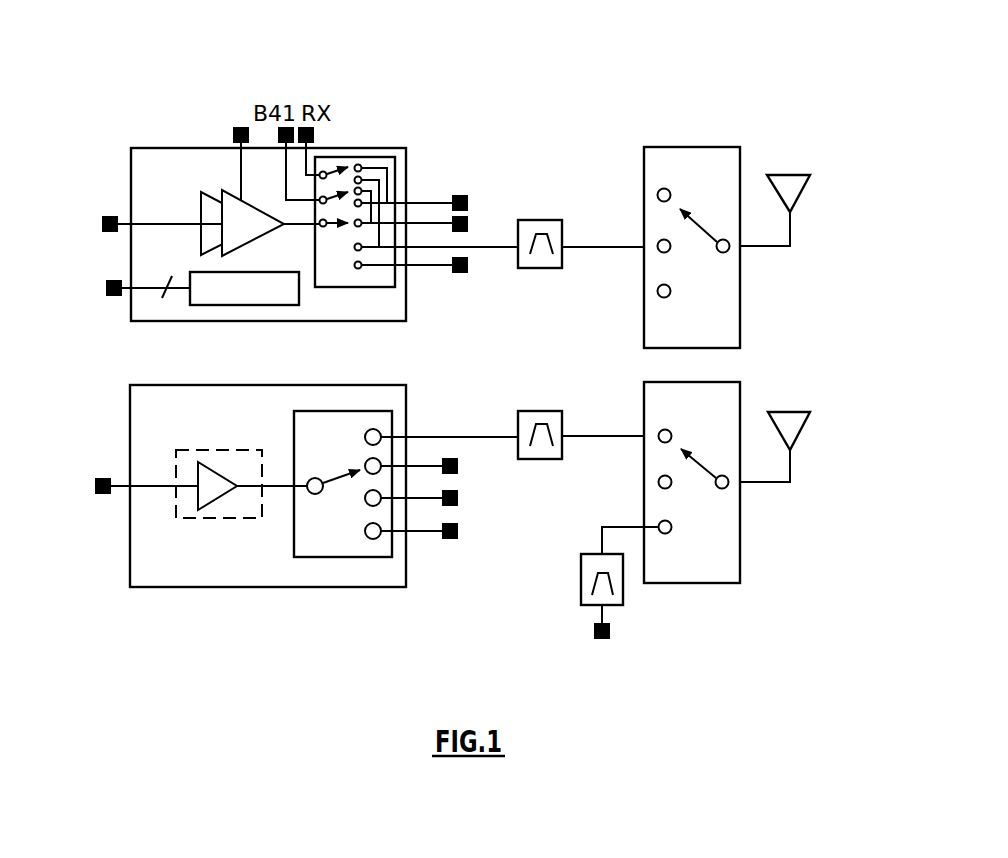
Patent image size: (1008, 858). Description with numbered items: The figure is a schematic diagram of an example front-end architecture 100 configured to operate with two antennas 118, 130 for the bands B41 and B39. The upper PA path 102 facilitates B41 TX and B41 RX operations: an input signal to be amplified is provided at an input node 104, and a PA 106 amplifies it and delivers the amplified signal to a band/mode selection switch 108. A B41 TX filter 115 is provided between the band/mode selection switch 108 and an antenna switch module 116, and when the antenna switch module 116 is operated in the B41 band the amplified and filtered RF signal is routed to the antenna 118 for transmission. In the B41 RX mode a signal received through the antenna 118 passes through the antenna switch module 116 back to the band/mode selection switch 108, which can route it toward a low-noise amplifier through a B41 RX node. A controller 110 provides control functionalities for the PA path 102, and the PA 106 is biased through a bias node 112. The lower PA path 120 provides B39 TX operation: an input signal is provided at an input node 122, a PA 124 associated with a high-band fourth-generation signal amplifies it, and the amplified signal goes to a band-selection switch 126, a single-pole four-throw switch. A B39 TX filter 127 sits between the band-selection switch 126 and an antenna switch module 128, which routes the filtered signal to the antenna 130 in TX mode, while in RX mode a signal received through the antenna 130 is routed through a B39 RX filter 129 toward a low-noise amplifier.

The front-end architecture 100 is at (477, 60).
The PA path 102 is at (155, 148).
The input node 104 is at (108, 215).
The PA 106 is at (211, 182).
The band/mode selection switch 108 is at (388, 287).
The controller 110 is at (245, 272).
The bias node 112 is at (233, 128).
The B41 TX filter 115 is at (540, 268).
The antenna switch module 116 is at (690, 147).
The antenna 118 is at (796, 205).
The PA path 120 is at (155, 385).
The input node 122 is at (102, 478).
The PA 124 is at (210, 518).
The band-selection switch 126 is at (294, 520).
The B39 TX filter 127 is at (540, 459).
The antenna switch module 128 is at (693, 583).
The B39 RX filter 129 is at (623, 598).
The antenna 130 is at (796, 440).